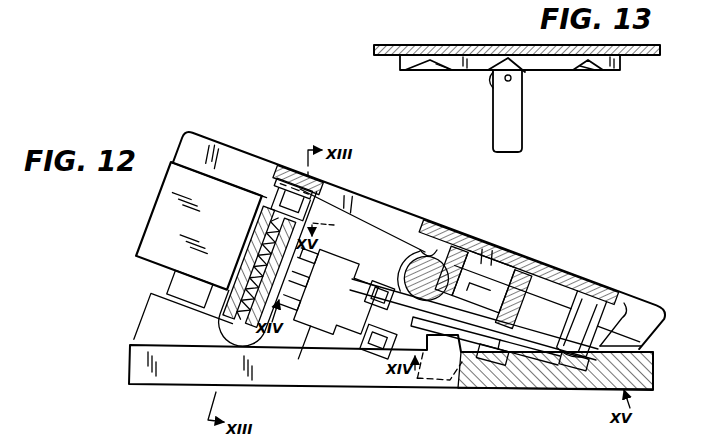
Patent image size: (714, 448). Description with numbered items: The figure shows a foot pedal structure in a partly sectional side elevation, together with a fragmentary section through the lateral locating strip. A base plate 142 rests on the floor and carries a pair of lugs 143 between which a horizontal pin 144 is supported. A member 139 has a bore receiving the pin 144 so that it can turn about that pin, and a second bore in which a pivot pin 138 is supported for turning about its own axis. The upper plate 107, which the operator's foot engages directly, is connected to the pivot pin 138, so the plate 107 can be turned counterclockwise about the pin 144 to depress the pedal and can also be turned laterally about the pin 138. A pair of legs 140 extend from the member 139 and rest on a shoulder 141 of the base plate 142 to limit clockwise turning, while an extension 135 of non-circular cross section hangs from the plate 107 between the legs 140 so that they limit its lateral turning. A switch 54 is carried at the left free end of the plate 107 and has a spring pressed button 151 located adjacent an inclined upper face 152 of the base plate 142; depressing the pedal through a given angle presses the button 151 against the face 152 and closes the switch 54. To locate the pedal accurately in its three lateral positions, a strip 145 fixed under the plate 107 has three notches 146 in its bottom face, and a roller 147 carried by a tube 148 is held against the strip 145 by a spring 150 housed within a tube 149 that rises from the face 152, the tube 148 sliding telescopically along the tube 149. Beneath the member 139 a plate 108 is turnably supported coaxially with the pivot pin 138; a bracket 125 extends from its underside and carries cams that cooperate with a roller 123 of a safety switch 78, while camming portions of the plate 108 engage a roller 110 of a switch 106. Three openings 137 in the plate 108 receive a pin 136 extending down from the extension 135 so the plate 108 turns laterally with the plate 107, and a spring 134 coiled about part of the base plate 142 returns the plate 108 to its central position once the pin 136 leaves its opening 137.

In FIG. 12, the switch 54 is at (166, 231).
In FIG. 12, the switch 78 is at (320, 318).
In FIG. 12, the switch 106 is at (340, 262).
In FIG. 12, the upper plate 107 is at (582, 297).
In FIG. 13, the upper plate 107 is at (458, 48).
In FIG. 12, the plate 108 is at (534, 362).
In FIG. 12, the roller 110 is at (372, 286).
In FIG. 12, the roller 123 is at (354, 326).
In FIG. 12, the bracket 125 is at (386, 326).
In FIG. 12, the spring 134 is at (486, 362).
In FIG. 12, the extension 135 is at (612, 304).
In FIG. 12, the pin 136 is at (604, 340).
In FIG. 12, the openings 137 is at (566, 372).
In FIG. 12, the pivot pin 138 is at (508, 258).
In FIG. 12, the member 139 is at (502, 286).
In FIG. 12, the legs 140 is at (606, 328).
In FIG. 12, the shoulder 141 is at (598, 372).
In FIG. 12, the base plate 142 is at (446, 386).
In FIG. 12, the lugs 143 is at (424, 290).
In FIG. 12, the horizontal pin 144 is at (456, 262).
In FIG. 12, the strip 145 is at (306, 182).
In FIG. 13, the strip 145 is at (548, 70).
In FIG. 13, the notches 146 is at (428, 66).
In FIG. 12, the roller 147 is at (292, 200).
In FIG. 13, the roller 147 is at (488, 82).
In FIG. 12, the tube 148 is at (262, 233).
In FIG. 13, the tube 148 is at (512, 114).
In FIG. 12, the tube 149 is at (240, 322).
In FIG. 12, the spring 150 is at (258, 280).
In FIG. 12, the spring pressed button 151 is at (194, 294).
In FIG. 12, the inclined upper face 152 is at (138, 312).